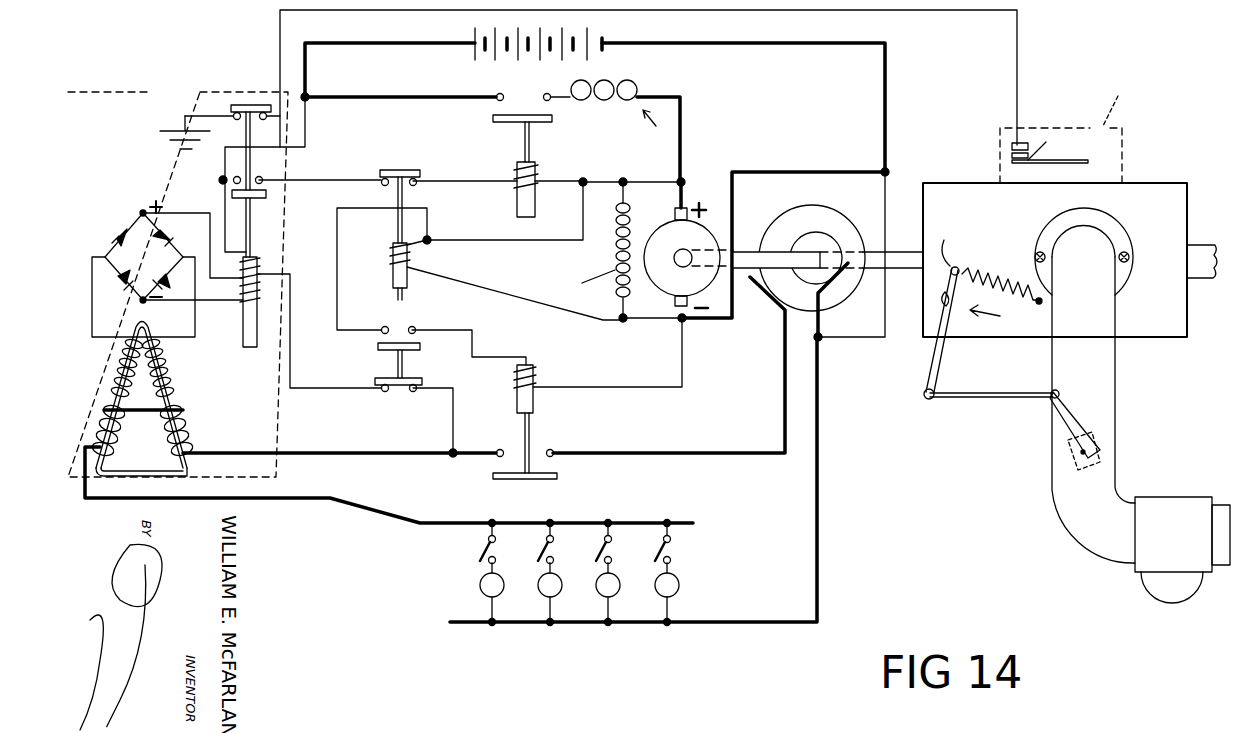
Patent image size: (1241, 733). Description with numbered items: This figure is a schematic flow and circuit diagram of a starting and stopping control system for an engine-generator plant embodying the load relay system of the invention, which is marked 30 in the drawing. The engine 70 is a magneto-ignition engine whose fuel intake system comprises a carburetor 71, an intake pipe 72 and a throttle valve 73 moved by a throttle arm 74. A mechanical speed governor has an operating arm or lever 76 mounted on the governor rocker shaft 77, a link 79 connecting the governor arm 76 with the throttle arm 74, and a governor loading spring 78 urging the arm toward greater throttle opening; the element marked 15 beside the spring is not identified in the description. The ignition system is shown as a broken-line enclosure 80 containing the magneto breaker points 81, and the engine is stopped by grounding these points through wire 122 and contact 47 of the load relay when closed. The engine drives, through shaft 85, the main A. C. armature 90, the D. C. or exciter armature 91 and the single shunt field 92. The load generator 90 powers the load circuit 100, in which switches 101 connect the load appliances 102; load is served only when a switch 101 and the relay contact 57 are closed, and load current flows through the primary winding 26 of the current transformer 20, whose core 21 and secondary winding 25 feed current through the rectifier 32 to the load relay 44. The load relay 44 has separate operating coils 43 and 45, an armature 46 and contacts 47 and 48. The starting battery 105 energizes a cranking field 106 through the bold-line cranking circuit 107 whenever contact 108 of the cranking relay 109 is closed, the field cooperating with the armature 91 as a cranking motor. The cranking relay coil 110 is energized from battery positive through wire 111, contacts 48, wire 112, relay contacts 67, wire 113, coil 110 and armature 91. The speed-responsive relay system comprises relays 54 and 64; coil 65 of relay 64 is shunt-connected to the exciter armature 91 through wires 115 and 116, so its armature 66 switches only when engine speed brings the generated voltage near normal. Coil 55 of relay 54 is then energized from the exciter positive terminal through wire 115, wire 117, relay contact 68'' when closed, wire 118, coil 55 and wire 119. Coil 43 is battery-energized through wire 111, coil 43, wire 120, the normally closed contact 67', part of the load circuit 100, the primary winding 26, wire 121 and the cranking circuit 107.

The direction arrow 15 is at (998, 317).
The current transformer 20 is at (169, 399).
The transformer core 21 is at (158, 466).
The secondary winding 25 is at (172, 372).
The primary winding 26 is at (186, 422).
The load relay system 30 is at (182, 90).
The rectifier 32 is at (122, 248).
The operating coil 43 is at (260, 291).
The load relay 44 is at (260, 306).
The operating coil 45 is at (243, 295).
The armature 46 is at (257, 338).
The contact 47 is at (258, 104).
The contacts 48 is at (262, 198).
The relay 54 is at (532, 414).
The operating coil 55 is at (533, 372).
The relay contact 57 is at (497, 484).
The relay 64 is at (407, 270).
The coil 65 is at (410, 252).
The armature 66 is at (405, 275).
The relay contacts 67 is at (400, 193).
The normally closed relay contact 67' is at (416, 404).
The relay contact 68'' is at (379, 353).
The engine 70 is at (1150, 195).
The carburetor 71 is at (1170, 515).
The intake pipe 72 is at (1115, 372).
The throttle valve 73 is at (1100, 432).
The throttle arm 74 is at (1068, 420).
The governor arm 76 is at (948, 355).
The governor rocker shaft 77 is at (944, 249).
The governor loading spring 78 is at (998, 252).
The link 79 is at (970, 400).
The ignition system 80 is at (1081, 132).
The magneto breaker points 81 is at (1050, 150).
The shaft 85 is at (905, 268).
The A. C. armature 90 is at (790, 222).
The exciter armature 91 is at (670, 228).
The shunt field 92 is at (616, 253).
The load circuit 100 is at (378, 450).
The switches 101 is at (668, 548).
The load appliances 102 is at (679, 585).
The starting battery 105 is at (592, 35).
The cranking field 106 is at (640, 90).
The cranking circuit 107 is at (414, 92).
The contact 108 is at (520, 112).
The cranking relay 109 is at (530, 182).
The operating coil 110 is at (535, 190).
The wire 111 is at (305, 135).
The wire 112 is at (345, 180).
The wire 113 is at (483, 180).
The wire 115 is at (498, 242).
The wire 116 is at (518, 292).
The wire 117 is at (337, 288).
The wire 118 is at (472, 333).
The wire 119 is at (682, 360).
The wire 120 is at (335, 392).
The wire 121 is at (868, 337).
The wire 122 is at (937, 10).